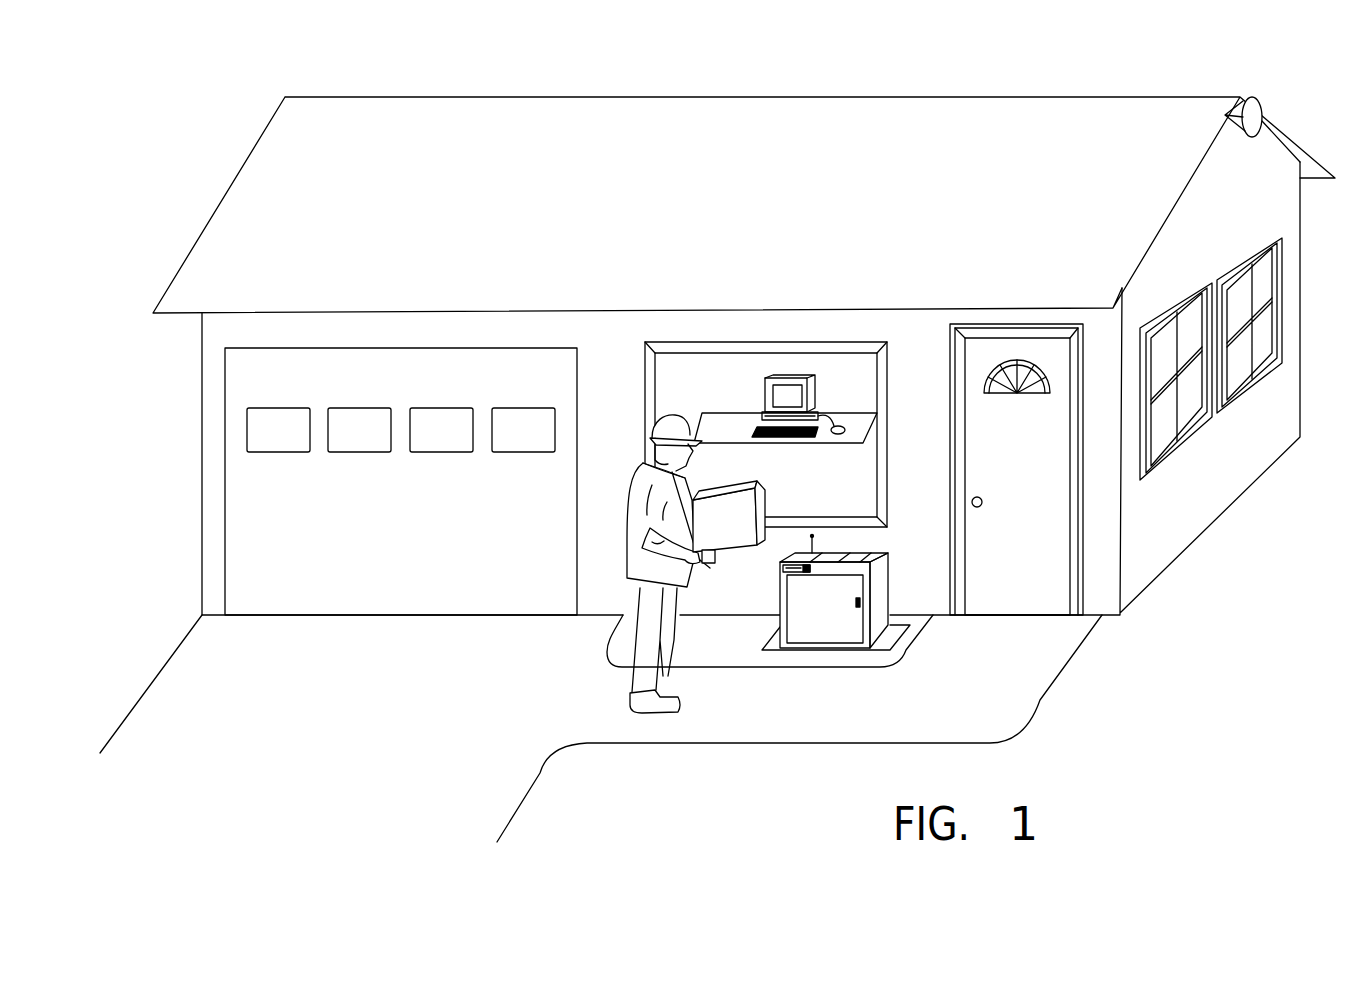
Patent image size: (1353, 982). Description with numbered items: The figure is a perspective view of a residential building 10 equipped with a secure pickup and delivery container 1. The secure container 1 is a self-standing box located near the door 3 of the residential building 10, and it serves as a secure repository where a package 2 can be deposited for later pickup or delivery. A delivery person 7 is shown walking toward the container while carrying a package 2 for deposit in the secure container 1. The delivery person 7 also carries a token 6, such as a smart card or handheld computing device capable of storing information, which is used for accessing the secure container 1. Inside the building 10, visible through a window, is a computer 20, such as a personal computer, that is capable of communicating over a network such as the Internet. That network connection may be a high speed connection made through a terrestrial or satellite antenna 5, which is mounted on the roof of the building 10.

The residential building 10 is at (230, 92).
The satellite antenna 5 is at (1254, 97).
The computer 20 is at (793, 378).
The door 3 is at (1026, 457).
The secure pickup and delivery container 1 is at (888, 553).
The package 2 is at (754, 488).
The token 6 is at (712, 562).
The delivery person 7 is at (630, 490).